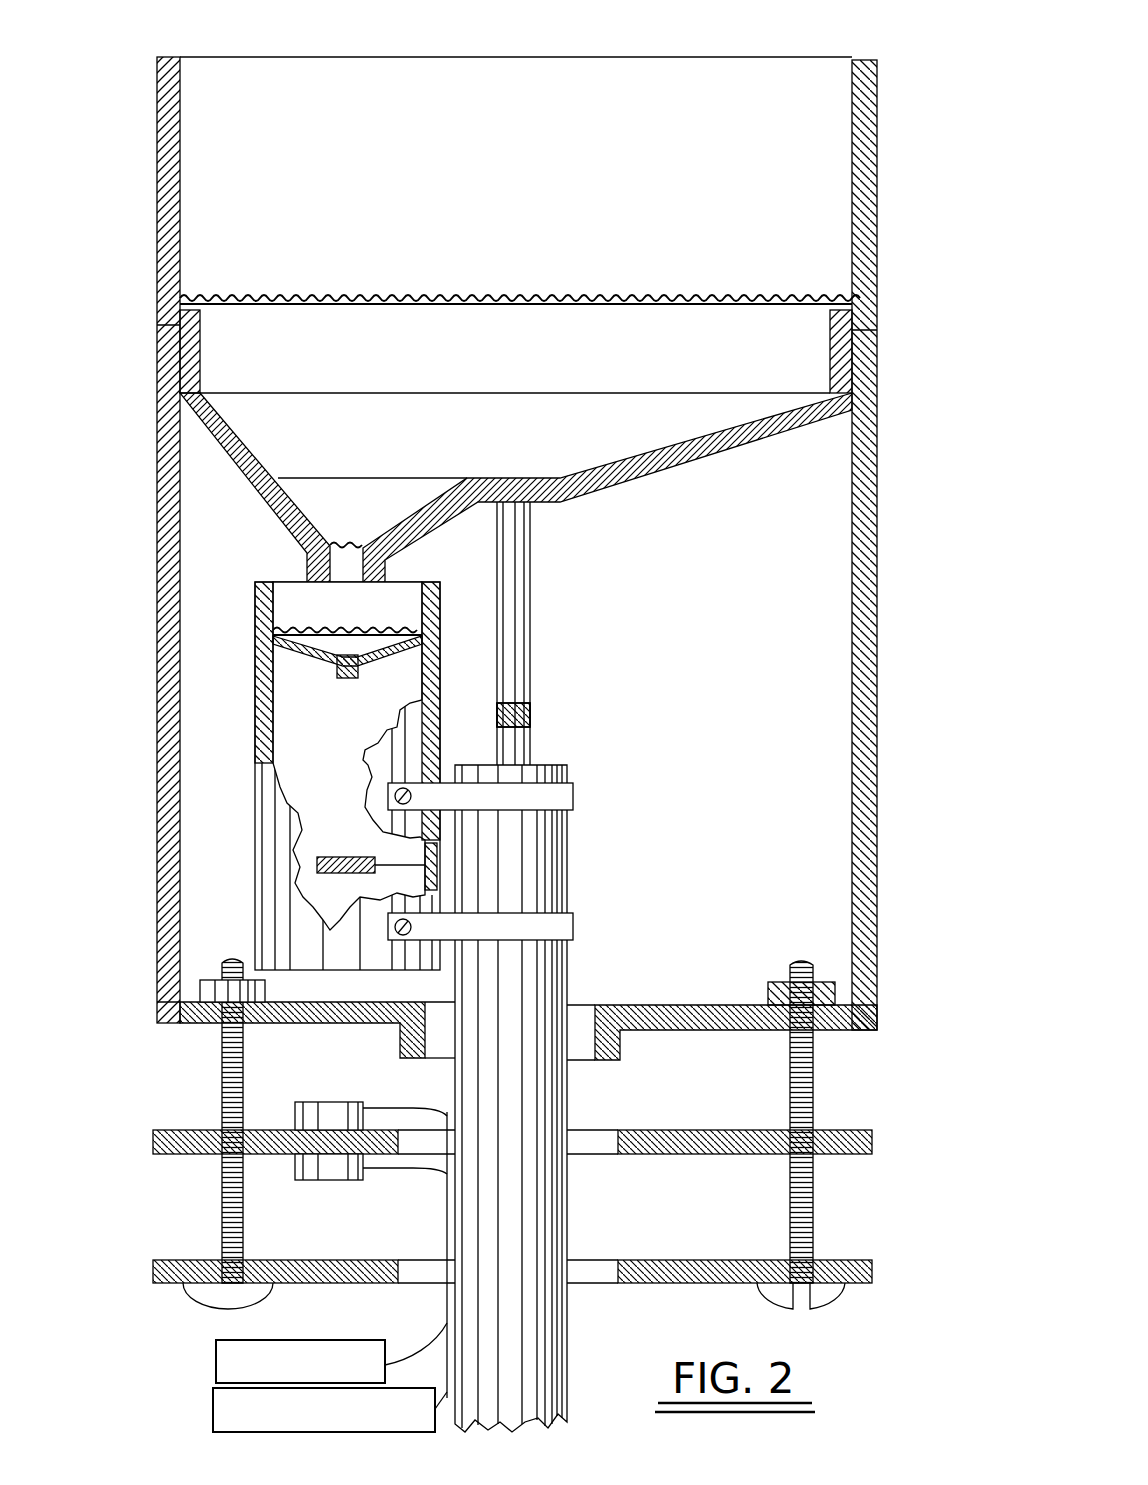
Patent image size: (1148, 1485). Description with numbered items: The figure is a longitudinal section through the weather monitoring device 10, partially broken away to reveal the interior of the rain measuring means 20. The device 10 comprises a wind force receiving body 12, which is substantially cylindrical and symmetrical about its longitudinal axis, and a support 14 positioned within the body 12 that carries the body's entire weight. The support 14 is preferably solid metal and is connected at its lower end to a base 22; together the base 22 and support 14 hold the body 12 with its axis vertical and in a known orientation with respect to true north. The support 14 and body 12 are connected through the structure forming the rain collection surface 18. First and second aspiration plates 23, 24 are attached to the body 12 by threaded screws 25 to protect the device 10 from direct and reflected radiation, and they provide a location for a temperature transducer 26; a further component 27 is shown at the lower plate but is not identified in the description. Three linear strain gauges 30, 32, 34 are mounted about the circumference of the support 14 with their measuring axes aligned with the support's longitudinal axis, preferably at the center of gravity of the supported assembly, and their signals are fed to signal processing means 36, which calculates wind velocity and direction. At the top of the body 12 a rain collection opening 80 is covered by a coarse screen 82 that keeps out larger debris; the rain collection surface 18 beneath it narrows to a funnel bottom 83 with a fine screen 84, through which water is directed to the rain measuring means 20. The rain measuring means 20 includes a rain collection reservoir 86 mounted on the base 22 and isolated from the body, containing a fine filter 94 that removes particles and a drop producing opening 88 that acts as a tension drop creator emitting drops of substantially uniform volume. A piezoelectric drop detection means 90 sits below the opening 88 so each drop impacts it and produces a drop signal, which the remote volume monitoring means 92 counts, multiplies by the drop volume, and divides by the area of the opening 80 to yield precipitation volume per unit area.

The weather monitoring device 10 is at (116, 158).
The wind force receiving body 12 is at (877, 549).
The support 14 is at (530, 578).
The rain collection surface 18 is at (628, 456).
The rain measuring means 20 is at (236, 842).
The base 22 is at (558, 983).
The first aspiration plate 23 is at (153, 1136).
The second aspiration plate 24 is at (153, 1264).
The threaded screws 25 is at (222, 1090).
The temperature transducer 26 is at (330, 1104).
The lower nut 27 is at (327, 1165).
The first strain gauge 30 is at (529, 720).
The second strain gauge 32 is at (513, 715).
The third strain gauge 34 is at (513, 715).
The signal processing means 36 is at (212, 1403).
The rain collection opening 80 is at (728, 86).
The coarse screen 82 is at (336, 297).
The funnel bottom 83 is at (442, 494).
The fine screen 84 is at (350, 544).
The rain collection reservoir 86 is at (295, 655).
The drop producing opening 88 is at (342, 682).
The drop detection means 90 is at (347, 857).
The volume monitoring means 92 is at (216, 1363).
The fine filter 94 is at (376, 640).